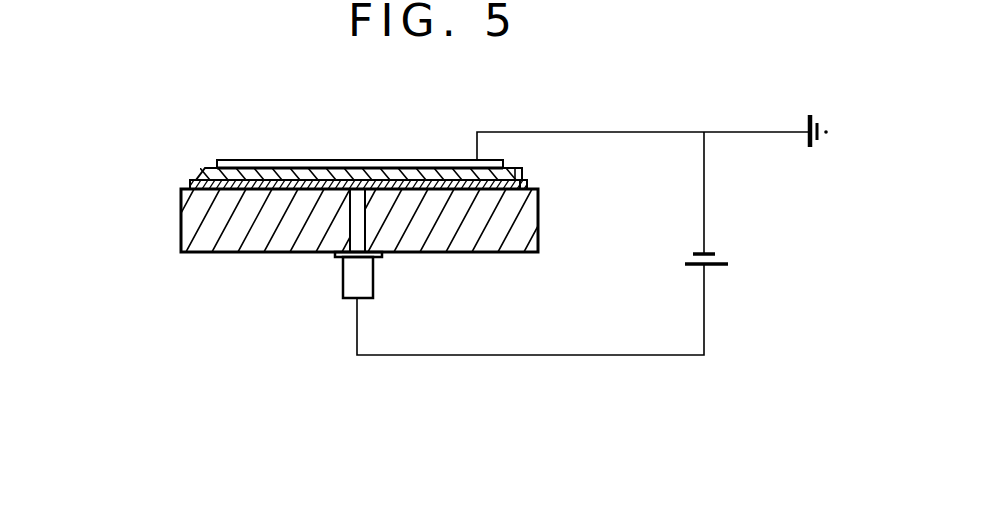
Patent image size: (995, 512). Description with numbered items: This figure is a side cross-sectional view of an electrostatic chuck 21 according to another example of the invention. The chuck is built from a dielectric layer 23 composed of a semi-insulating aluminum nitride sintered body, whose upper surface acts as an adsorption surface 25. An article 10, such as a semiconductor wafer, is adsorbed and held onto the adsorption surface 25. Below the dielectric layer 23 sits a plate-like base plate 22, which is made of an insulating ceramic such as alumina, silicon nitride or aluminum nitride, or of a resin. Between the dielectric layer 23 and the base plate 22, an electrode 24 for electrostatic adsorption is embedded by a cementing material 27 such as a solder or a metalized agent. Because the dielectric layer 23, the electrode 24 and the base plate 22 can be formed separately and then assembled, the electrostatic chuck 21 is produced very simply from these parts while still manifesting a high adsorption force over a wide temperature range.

The article 10 is at (362, 160).
The electrostatic chuck 21 is at (168, 200).
The base plate 22 is at (207, 230).
The dielectric layer 23 is at (198, 178).
The electrode for electrostatic adsorption 24 is at (470, 190).
The adsorption surface 25 is at (522, 182).
The cementing material 27 is at (525, 184).